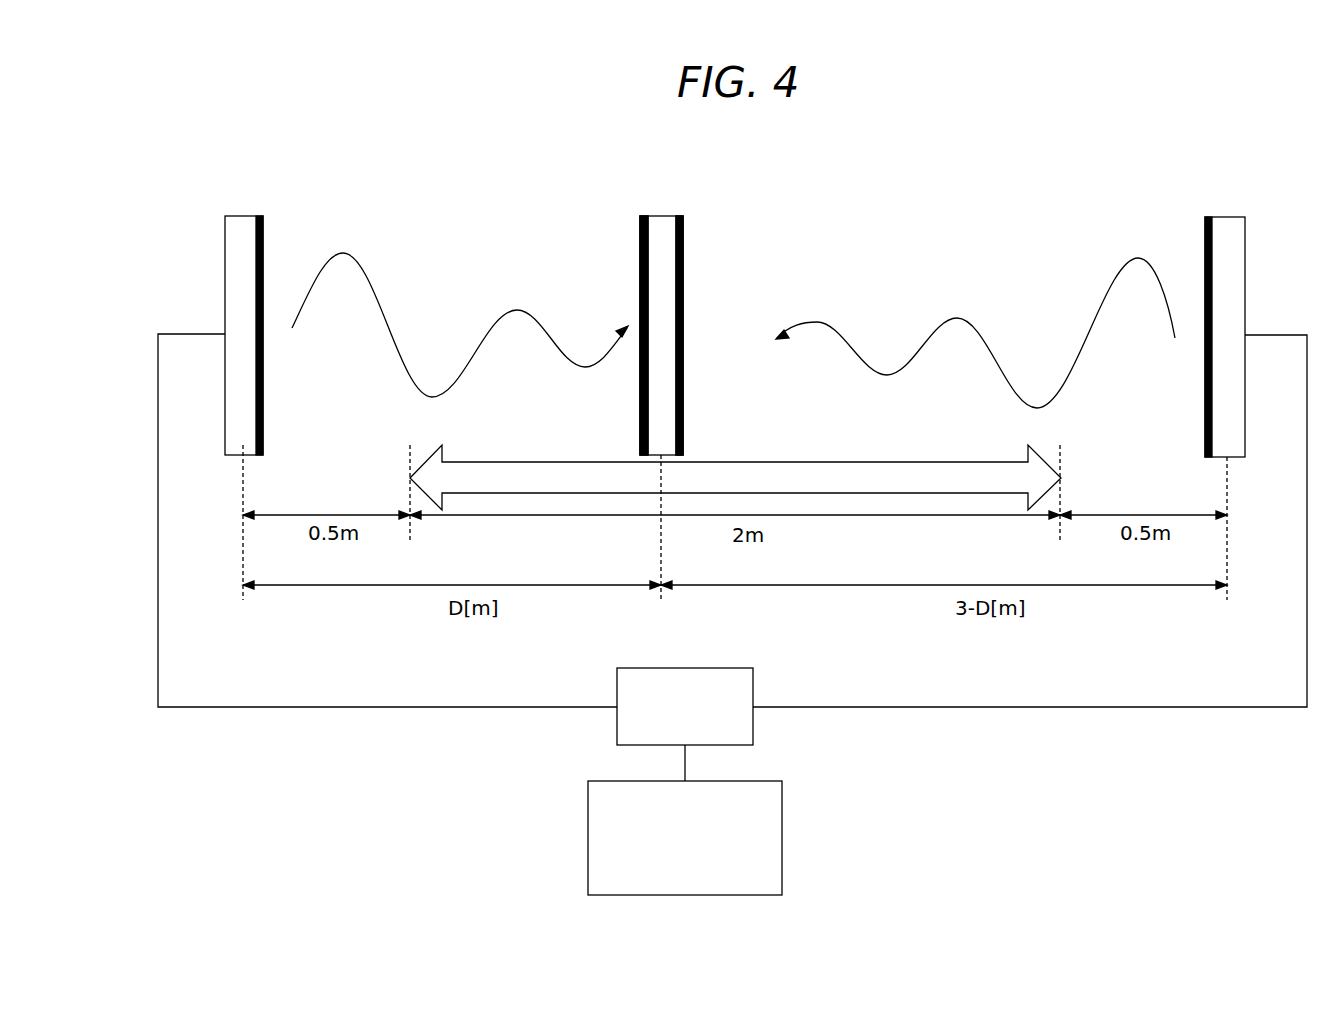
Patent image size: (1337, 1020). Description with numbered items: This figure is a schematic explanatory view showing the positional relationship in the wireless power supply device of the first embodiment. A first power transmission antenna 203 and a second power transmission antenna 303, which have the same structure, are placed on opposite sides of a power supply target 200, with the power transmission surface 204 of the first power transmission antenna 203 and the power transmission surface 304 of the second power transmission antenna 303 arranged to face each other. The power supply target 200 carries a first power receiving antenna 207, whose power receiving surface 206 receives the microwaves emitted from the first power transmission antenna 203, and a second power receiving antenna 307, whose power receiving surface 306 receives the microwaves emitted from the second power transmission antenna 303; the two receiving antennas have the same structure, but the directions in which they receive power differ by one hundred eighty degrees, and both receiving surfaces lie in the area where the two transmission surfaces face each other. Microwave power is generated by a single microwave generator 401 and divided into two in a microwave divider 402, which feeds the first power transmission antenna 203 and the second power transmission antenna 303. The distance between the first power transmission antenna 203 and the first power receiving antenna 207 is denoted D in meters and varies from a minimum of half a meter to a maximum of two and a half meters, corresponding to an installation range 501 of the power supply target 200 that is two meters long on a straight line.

The power supply target 200 is at (662, 292).
The first power transmission antenna 203 is at (250, 228).
The power transmission surface 204 is at (267, 427).
The power receiving surface 206 is at (640, 288).
The first power receiving antenna 207 is at (640, 214).
The power receiving surface 306 is at (683, 290).
The second power receiving antenna 307 is at (683, 214).
The second power transmission antenna 303 is at (1218, 232).
The power transmission surface 304 is at (1205, 393).
The microwave generator 401 is at (762, 837).
The microwave divider 402 is at (737, 682).
The installation range 501 is at (905, 472).